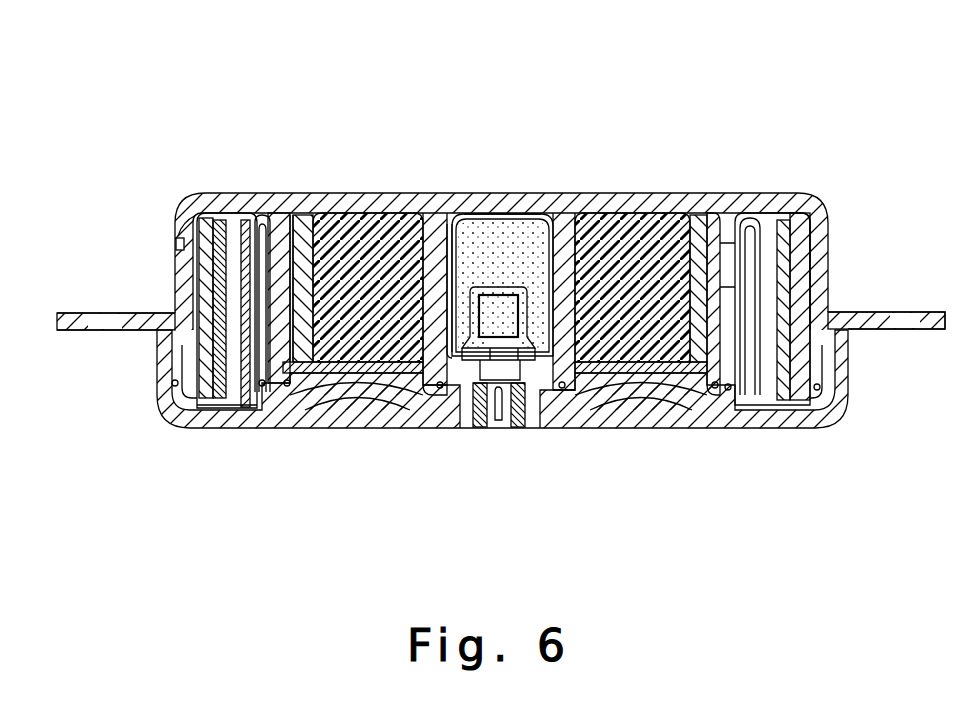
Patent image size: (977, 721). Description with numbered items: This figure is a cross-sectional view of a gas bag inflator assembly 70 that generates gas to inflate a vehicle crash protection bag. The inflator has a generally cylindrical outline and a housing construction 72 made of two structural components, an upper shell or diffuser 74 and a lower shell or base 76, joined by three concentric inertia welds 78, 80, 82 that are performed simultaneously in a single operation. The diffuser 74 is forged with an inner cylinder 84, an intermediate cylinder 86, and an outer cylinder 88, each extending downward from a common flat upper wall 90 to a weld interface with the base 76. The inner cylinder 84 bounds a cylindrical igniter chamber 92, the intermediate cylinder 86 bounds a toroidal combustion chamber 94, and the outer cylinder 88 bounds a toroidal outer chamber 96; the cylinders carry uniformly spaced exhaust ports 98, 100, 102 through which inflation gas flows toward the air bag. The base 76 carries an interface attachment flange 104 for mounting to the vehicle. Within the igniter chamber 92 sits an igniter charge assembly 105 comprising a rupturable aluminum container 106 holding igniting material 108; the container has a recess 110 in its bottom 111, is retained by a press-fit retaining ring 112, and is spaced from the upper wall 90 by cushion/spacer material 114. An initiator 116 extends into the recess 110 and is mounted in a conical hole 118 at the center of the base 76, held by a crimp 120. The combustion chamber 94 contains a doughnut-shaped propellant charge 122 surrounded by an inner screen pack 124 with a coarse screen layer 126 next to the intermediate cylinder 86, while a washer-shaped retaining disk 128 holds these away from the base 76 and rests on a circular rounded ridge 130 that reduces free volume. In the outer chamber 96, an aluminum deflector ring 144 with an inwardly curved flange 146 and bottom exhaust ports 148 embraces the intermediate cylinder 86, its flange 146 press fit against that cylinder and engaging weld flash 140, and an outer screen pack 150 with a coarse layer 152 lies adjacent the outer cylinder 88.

The gas generator or inflator assembly 70 is at (432, 130).
The housing construction 72 is at (507, 310).
The upper shell or diffuser 74 is at (810, 206).
The lower shell or base 76 is at (833, 397).
The inertia weld 78 is at (585, 420).
The inertia weld 80 is at (728, 390).
The inertia weld 82 is at (817, 390).
The inner cylinder 84 is at (432, 220).
The intermediate cylinder 86 is at (266, 215).
The outer cylinder 88 is at (192, 208).
The upper wall 90 is at (368, 256).
The igniter chamber 92 is at (513, 215).
The combustion chamber 94 is at (643, 222).
The outer chamber 96 is at (774, 218).
The exhaust openings or ports 98 is at (453, 215).
The exhaust openings or ports 100 is at (225, 212).
The exhaust openings or ports 102 is at (182, 245).
The interface attachment flange 104 is at (933, 312).
The igniter charge assembly 105 is at (522, 199).
The container 106 is at (558, 222).
The igniting material 108 is at (528, 213).
The recess or cavity 110 is at (490, 364).
The bottom 111 is at (555, 412).
The retaining ring 112 is at (446, 397).
The cushion/spacer material 114 is at (481, 221).
The initiator 116 is at (508, 322).
The hole 118 is at (527, 408).
The crimp 120 is at (537, 286).
The propellant charge 122 is at (349, 222).
The inner screen pack or combustion chamber filter 124 is at (305, 225).
The layer of coarse screen 126 is at (289, 220).
The retaining ring or disk 128 is at (335, 374).
The circular rounded ridge 130 is at (363, 400).
The weld flash 140 is at (262, 395).
The deflector ring 144 is at (222, 390).
The curved flange 146 is at (743, 215).
The exhaust openings or ports 148 is at (240, 378).
The outer screen pack or filter 150 is at (217, 287).
The coarse layer 152 is at (207, 313).